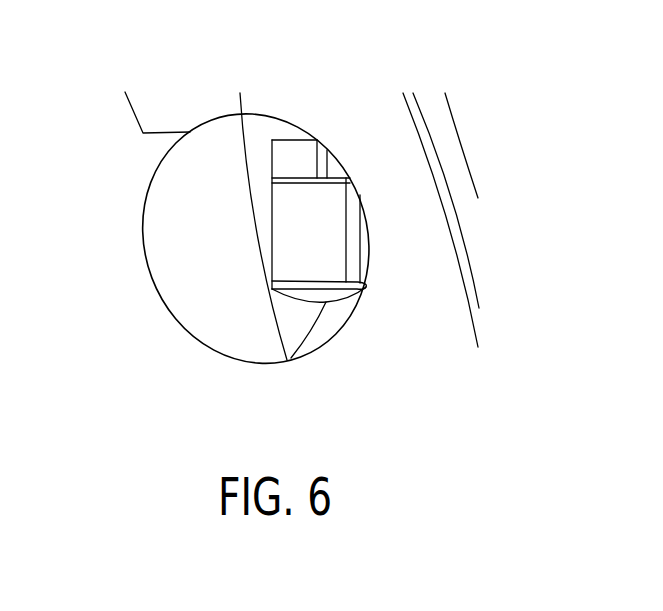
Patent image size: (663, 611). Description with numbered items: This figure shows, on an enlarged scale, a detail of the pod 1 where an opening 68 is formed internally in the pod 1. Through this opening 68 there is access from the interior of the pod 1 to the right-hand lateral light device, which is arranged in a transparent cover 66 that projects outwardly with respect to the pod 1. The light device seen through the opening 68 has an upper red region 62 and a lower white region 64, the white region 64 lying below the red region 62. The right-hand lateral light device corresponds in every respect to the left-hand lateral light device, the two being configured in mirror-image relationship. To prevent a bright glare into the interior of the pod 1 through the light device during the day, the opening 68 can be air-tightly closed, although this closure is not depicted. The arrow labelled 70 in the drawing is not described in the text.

The pod 1 is at (408, 175).
The upper red region 62 is at (303, 153).
The lower white region 64 is at (318, 237).
The transparent cover 66 is at (322, 335).
The opening 68 is at (347, 322).
The fastening assembly 70 is at (276, 92).